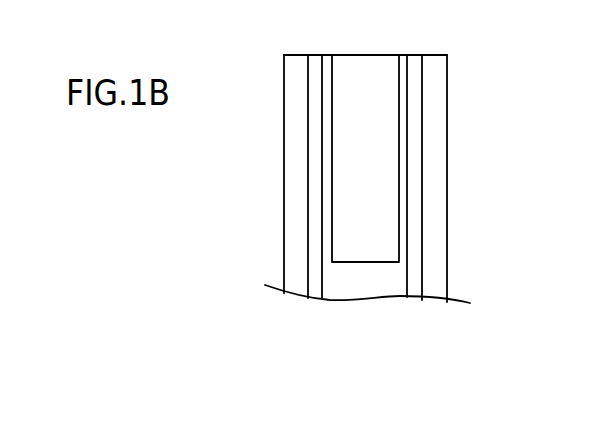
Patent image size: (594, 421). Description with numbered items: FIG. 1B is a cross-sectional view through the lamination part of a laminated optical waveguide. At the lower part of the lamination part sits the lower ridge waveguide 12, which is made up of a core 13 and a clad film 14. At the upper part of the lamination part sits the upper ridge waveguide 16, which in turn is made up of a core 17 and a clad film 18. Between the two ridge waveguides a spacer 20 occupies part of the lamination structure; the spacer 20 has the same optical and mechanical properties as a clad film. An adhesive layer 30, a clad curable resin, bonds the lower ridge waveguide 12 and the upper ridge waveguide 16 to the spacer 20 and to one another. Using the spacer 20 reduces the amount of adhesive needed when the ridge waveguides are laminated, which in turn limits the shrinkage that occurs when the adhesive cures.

The lower ridge waveguide 12 is at (448, 44).
The core 13 is at (415, 182).
The clad film 14 is at (440, 228).
The upper ridge waveguide 16 is at (322, 44).
The core 17 is at (310, 230).
The clad film 18 is at (293, 178).
The spacer 20 is at (380, 235).
The adhesive layer 30 is at (366, 293).